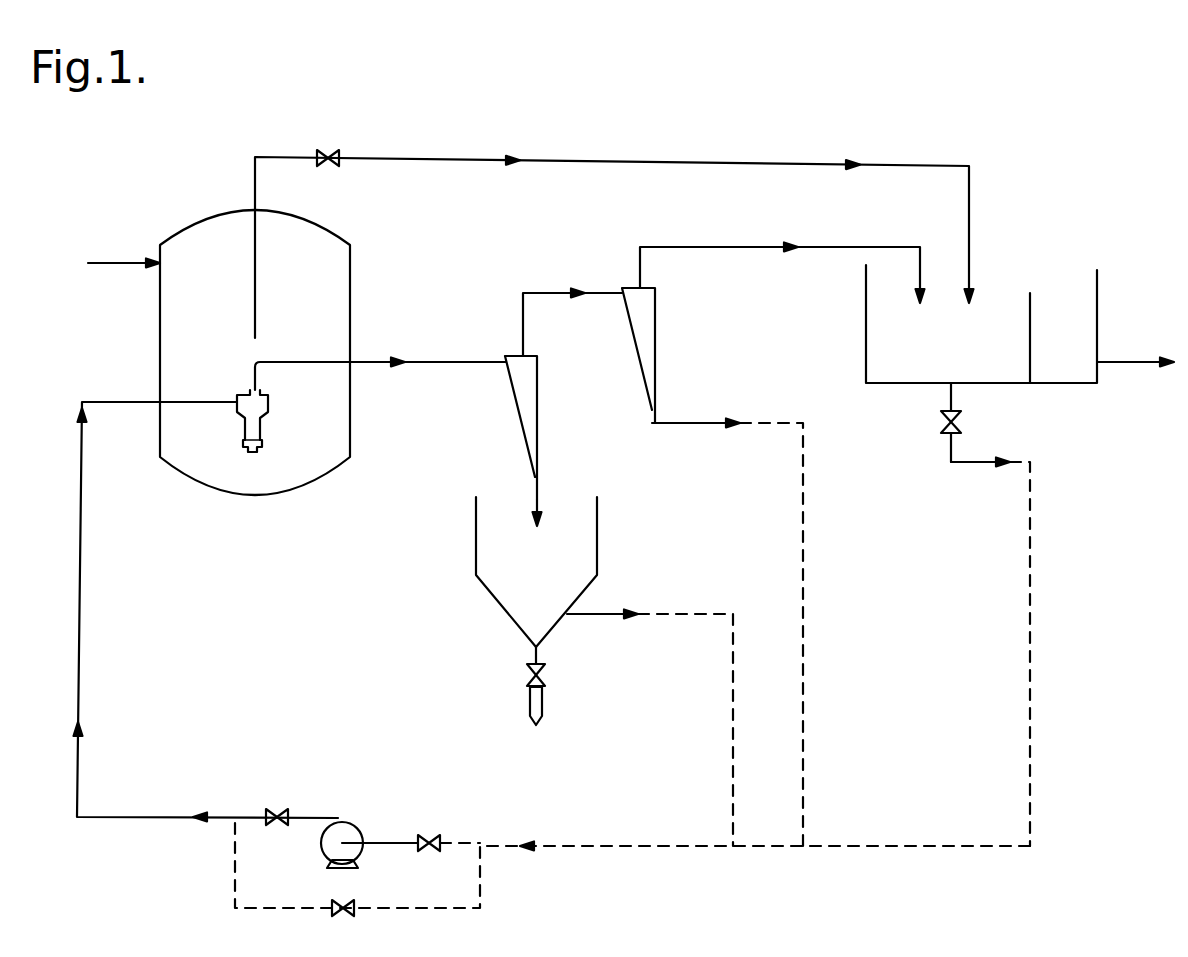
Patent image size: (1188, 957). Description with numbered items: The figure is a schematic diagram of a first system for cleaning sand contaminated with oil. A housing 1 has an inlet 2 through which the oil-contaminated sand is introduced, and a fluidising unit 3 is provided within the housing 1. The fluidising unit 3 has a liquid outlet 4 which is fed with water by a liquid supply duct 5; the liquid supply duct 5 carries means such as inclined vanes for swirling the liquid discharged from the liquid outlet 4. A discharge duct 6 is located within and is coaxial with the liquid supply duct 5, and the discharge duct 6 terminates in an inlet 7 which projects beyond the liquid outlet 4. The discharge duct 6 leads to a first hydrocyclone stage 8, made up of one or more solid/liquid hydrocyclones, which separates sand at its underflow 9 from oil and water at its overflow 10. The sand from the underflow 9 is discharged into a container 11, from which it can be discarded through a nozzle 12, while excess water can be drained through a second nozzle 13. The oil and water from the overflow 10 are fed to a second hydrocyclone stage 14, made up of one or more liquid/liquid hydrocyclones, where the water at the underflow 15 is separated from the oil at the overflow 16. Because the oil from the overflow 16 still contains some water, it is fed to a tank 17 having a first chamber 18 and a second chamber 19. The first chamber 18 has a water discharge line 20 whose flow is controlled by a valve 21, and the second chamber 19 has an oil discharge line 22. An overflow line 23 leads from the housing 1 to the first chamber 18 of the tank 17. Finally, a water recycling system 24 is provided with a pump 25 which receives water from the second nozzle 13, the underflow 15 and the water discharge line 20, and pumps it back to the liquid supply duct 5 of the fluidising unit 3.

The housing 1 is at (350, 287).
The inlet 2 is at (98, 262).
The fluidising unit 3 is at (268, 403).
The liquid outlet 4 is at (259, 440).
The liquid supply duct 5 is at (106, 402).
The discharge duct 6 is at (425, 360).
The inlet 7 is at (252, 452).
The first hydrocyclone stage 8 is at (540, 396).
The underflow 9 is at (540, 499).
The overflow 10 is at (531, 292).
The container 11 is at (499, 601).
The nozzle 12 is at (544, 709).
The second nozzle 13 is at (600, 617).
The second hydrocyclone stage 14 is at (657, 325).
The underflow 15 is at (690, 424).
The overflow 16 is at (668, 246).
The tank 17 is at (1098, 296).
The first chamber 18 is at (952, 360).
The second chamber 19 is at (1077, 360).
The water discharge line 20 is at (1031, 556).
The valve 21 is at (940, 422).
The oil discharge line 22 is at (1138, 364).
The overflow line 23 is at (278, 156).
The water recycling system 24 is at (650, 848).
The pump 25 is at (357, 826).